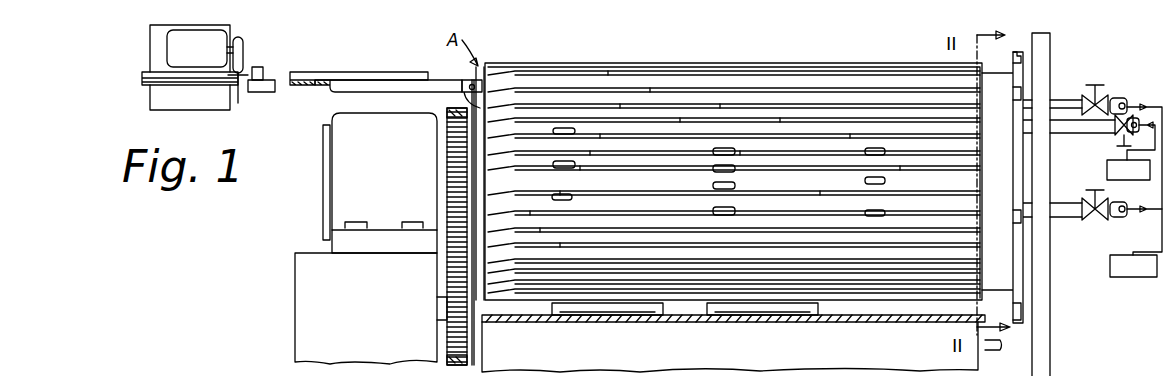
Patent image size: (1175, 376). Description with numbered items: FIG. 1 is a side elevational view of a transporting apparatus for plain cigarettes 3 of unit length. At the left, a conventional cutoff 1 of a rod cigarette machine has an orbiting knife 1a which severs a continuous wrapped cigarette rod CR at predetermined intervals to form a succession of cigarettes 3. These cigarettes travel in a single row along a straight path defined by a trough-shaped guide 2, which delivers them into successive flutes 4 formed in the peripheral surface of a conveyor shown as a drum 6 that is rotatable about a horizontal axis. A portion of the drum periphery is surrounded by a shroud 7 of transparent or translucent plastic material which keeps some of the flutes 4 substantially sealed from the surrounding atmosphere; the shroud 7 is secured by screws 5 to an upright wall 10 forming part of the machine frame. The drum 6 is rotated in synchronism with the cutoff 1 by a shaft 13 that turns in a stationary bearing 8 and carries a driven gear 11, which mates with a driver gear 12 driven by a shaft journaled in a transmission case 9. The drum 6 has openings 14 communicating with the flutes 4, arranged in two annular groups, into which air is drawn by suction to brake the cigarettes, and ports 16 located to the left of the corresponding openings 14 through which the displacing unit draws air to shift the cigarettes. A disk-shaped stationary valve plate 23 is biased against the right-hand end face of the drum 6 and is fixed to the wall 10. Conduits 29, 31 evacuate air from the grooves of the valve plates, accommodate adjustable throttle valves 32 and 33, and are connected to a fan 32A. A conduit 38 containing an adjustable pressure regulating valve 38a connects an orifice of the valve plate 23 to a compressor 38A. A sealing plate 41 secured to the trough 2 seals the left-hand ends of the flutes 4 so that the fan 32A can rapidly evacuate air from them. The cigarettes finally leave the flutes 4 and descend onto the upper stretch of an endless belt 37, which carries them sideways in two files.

The cutoff 1 is at (165, 47).
The orbiting knife 1a is at (238, 104).
The trough-shaped guide 2 is at (268, 86).
The plain cigarettes 3 is at (256, 70).
The flutes 4 is at (505, 153).
The screws 5 is at (1012, 60).
The conveyor drum 6 is at (490, 301).
The sealing member or shroud 7 is at (530, 66).
The stationary bearing 8 is at (336, 146).
The transmission case 9 is at (308, 285).
The upright wall 10 is at (1040, 291).
The driven gear 11 is at (450, 112).
The driver gear 12 is at (452, 348).
The shaft 13 is at (455, 190).
The openings 14 is at (884, 197).
The ports 16 is at (553, 197).
The second stationary valve plate 23 is at (998, 247).
The conduit 29 is at (1058, 102).
The conduit 31 is at (1058, 205).
The adjustable throttle valve 32 is at (1106, 96).
The fan 32A is at (1136, 190).
The adjustable throttle valve 33 is at (1092, 218).
The endless belt 37 is at (520, 324).
The conduit 38 is at (1066, 130).
The adjustable pressure regulating valve 38a is at (1128, 120).
The compressor 38A is at (1131, 151).
The sealing plate 41 is at (466, 78).
The continuous wrapped cigarette rod CR is at (148, 80).